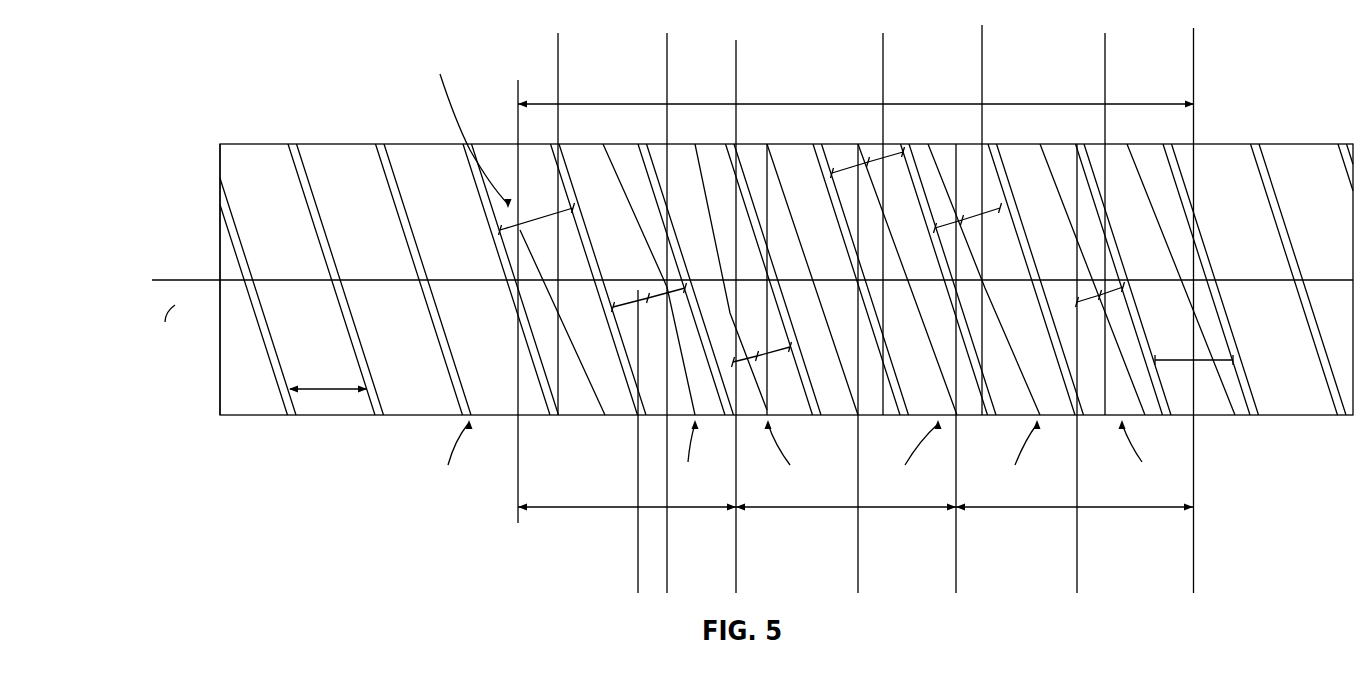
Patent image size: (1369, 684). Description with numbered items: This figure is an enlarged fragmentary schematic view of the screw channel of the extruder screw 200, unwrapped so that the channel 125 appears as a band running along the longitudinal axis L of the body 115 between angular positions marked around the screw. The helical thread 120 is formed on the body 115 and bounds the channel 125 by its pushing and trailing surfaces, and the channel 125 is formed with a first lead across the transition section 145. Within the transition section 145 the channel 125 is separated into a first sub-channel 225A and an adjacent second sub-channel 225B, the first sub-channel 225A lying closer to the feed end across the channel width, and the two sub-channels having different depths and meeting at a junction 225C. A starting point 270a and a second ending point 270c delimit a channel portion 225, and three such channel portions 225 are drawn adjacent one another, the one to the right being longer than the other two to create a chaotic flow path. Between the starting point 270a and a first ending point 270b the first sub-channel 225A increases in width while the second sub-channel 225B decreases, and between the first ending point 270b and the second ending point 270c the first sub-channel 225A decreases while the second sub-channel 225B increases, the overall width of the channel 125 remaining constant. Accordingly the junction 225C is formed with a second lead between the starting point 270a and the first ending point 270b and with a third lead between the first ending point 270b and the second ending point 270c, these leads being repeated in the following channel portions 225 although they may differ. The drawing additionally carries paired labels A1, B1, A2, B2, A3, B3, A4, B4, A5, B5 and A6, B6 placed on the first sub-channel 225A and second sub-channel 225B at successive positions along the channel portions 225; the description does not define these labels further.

The extruder screw 200 is at (213, 42).
The body 115 is at (230, 418).
The helical thread 120 is at (292, 146).
The channel 125 is at (322, 395).
The transition section 145 is at (1040, 103).
The channel portion 225 is at (657, 510).
The first sub-channel 225A is at (561, 416).
The second sub-channel 225B is at (622, 416).
The junction 225C is at (613, 166).
The starting point 270a is at (518, 520).
The first ending point 270b is at (667, 83).
The second ending point 270c is at (737, 85).
The strand A width 1 A1 is at (631, 293).
The strand B width 1 B1 is at (671, 305).
The strand A width 2 A2 is at (736, 346).
The strand B width 2 B2 is at (780, 367).
The strand A width 3 A3 is at (847, 160).
The strand B width 3 B3 is at (896, 137).
The strand A width 4 A4 is at (945, 209).
The strand B width 4 B4 is at (988, 201).
The strand A width 5 A5 is at (1073, 299).
The strand B width 5 B5 is at (1107, 276).
The strand A width 6 A6 is at (1171, 348).
The strand B width 6 B6 is at (1213, 348).